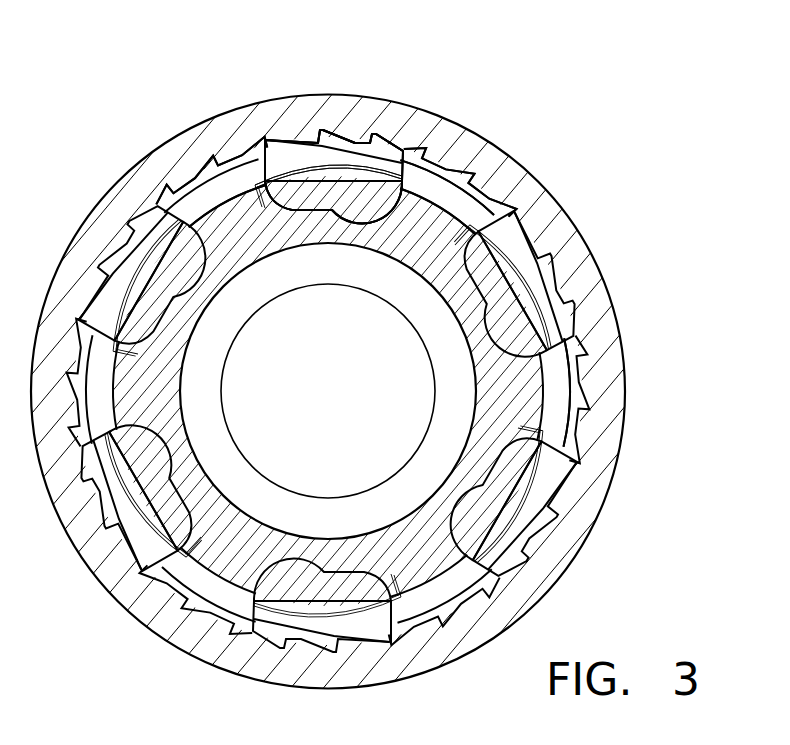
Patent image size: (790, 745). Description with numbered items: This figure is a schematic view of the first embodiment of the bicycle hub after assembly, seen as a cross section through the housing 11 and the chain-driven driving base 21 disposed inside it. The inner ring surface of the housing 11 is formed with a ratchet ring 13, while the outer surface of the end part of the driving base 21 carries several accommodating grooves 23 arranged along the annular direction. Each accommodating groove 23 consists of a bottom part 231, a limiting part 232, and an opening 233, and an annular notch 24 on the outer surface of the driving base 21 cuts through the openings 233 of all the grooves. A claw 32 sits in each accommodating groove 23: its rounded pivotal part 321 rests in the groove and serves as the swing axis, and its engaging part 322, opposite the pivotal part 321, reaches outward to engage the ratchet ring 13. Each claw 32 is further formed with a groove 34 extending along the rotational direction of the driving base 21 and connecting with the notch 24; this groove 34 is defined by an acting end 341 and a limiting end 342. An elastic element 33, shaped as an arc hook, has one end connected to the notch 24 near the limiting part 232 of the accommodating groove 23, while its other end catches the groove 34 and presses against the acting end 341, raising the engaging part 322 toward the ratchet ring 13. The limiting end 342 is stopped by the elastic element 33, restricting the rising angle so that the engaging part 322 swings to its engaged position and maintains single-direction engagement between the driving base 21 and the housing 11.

The housing 11 is at (137, 180).
The ratchet ring 13 is at (205, 152).
The driving base 21 is at (585, 425).
The accommodating groove 23 is at (320, 240).
The bottom part 231 is at (372, 222).
The limiting part 232 is at (283, 208).
The opening 233 is at (250, 162).
The notch 24 is at (470, 200).
The claw 32 is at (318, 136).
The pivotal part 321 is at (478, 176).
The engaging part 322 is at (272, 150).
The elastic element 33 is at (325, 135).
The groove 34 is at (362, 140).
The acting end 341 is at (395, 150).
The limiting end 342 is at (300, 133).